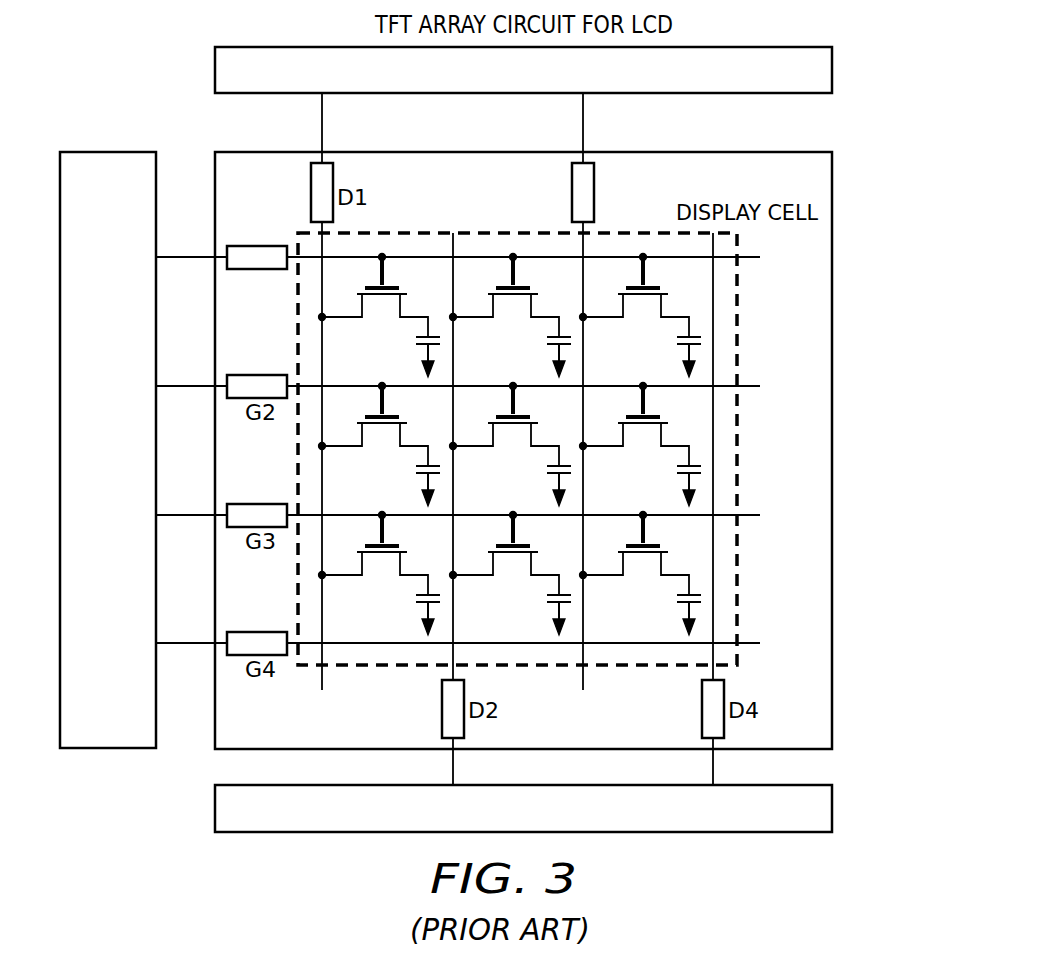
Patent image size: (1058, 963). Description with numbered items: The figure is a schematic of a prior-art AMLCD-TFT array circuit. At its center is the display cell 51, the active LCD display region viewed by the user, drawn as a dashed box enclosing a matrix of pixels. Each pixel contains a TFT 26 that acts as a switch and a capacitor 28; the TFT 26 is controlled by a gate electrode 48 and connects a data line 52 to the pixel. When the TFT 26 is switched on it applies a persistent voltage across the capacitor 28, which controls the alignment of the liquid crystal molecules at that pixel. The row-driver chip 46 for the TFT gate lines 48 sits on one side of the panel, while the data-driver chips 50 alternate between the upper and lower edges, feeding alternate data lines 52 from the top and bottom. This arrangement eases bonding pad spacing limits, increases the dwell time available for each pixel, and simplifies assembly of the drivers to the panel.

The data-driver chip 50 is at (832, 73).
The data line 52 is at (583, 133).
The display cell 51 is at (466, 232).
The gate electrode 48 is at (193, 253).
The row-driver chip 46 is at (123, 503).
The TFT 26 is at (394, 325).
The capacitor 28 is at (406, 346).